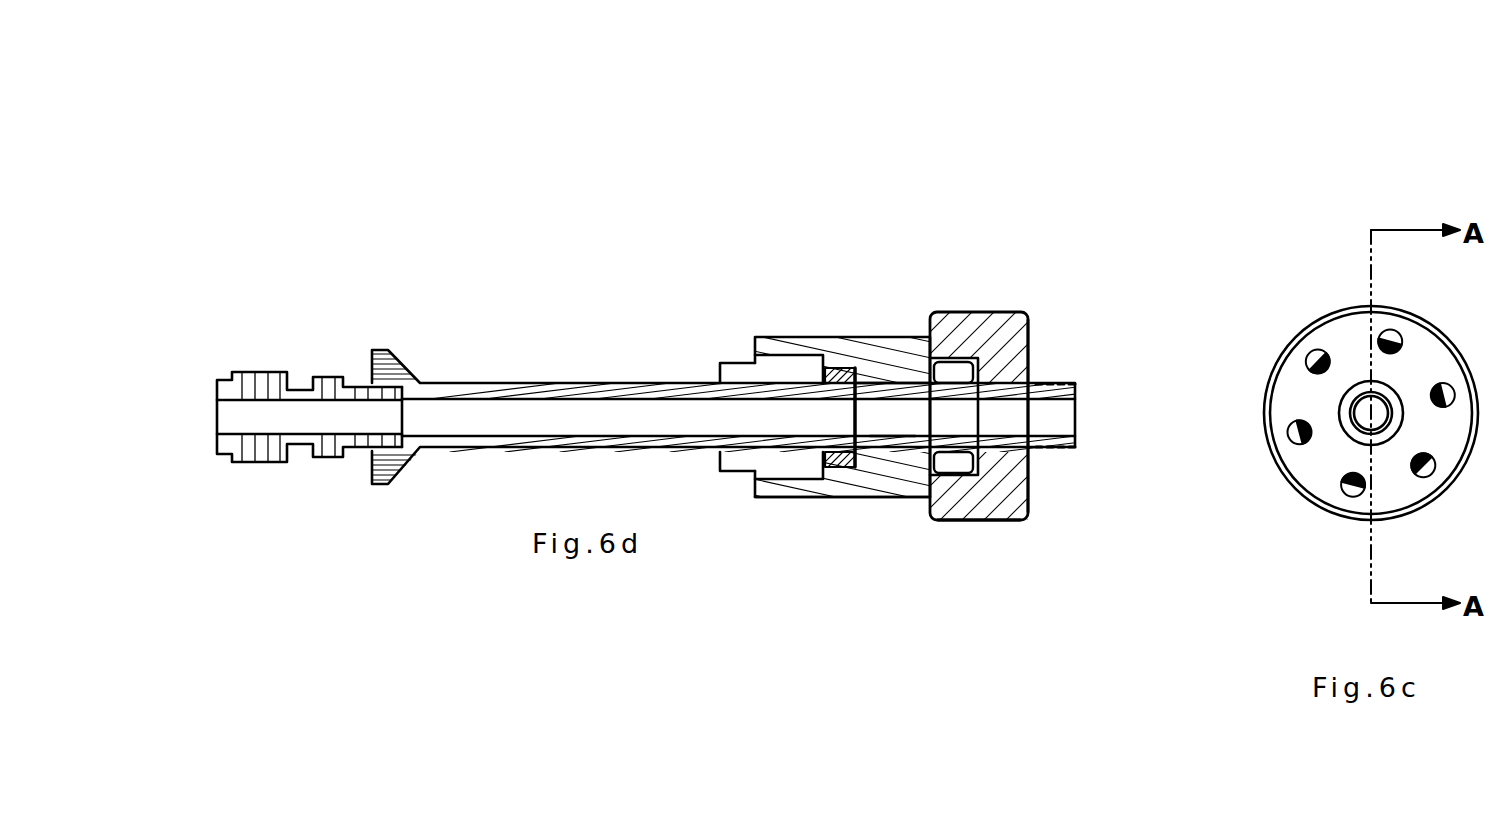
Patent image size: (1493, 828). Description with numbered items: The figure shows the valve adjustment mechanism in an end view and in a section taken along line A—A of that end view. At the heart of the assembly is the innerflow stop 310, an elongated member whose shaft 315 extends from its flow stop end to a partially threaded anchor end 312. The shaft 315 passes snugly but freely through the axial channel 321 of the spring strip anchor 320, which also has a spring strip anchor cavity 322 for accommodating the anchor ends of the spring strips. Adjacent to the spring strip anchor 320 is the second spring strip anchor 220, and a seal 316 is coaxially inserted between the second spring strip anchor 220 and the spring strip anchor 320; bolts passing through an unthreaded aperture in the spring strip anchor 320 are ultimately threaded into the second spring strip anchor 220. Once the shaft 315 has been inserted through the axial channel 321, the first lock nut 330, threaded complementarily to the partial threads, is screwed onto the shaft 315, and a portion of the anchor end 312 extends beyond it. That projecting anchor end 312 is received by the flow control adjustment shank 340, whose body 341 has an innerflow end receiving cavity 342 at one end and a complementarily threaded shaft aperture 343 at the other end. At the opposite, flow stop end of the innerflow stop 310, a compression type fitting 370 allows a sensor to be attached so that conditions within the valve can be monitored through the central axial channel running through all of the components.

In FIG. 6D, the second spring strip anchor 220 is at (740, 362).
In FIG. 6D, the innerflow stop 310 is at (475, 387).
In FIG. 6D, the partially threaded anchor end 312 is at (1062, 383).
In FIG. 6D, the shaft 315 is at (893, 447).
In FIG. 6D, the seal 316 is at (843, 465).
In FIG. 6D, the spring strip anchor 320 is at (810, 337).
In FIG. 6D, the axial channel 321 is at (888, 382).
In FIG. 6D, the spring strip anchor cavity 322 is at (778, 490).
In FIG. 6D, the first lock nut 330 is at (948, 368).
In FIG. 6D, the flow control adjustment shank 340 is at (990, 312).
In FIG. 6C, the flow control adjustment shank 340 is at (1348, 350).
In FIG. 6D, the body 341 is at (1008, 503).
In FIG. 6D, the innerflow end receiving cavity 342 is at (958, 478).
In FIG. 6D, the threaded shaft aperture 343 is at (1028, 340).
In FIG. 6D, the compression type fitting 370 is at (265, 373).